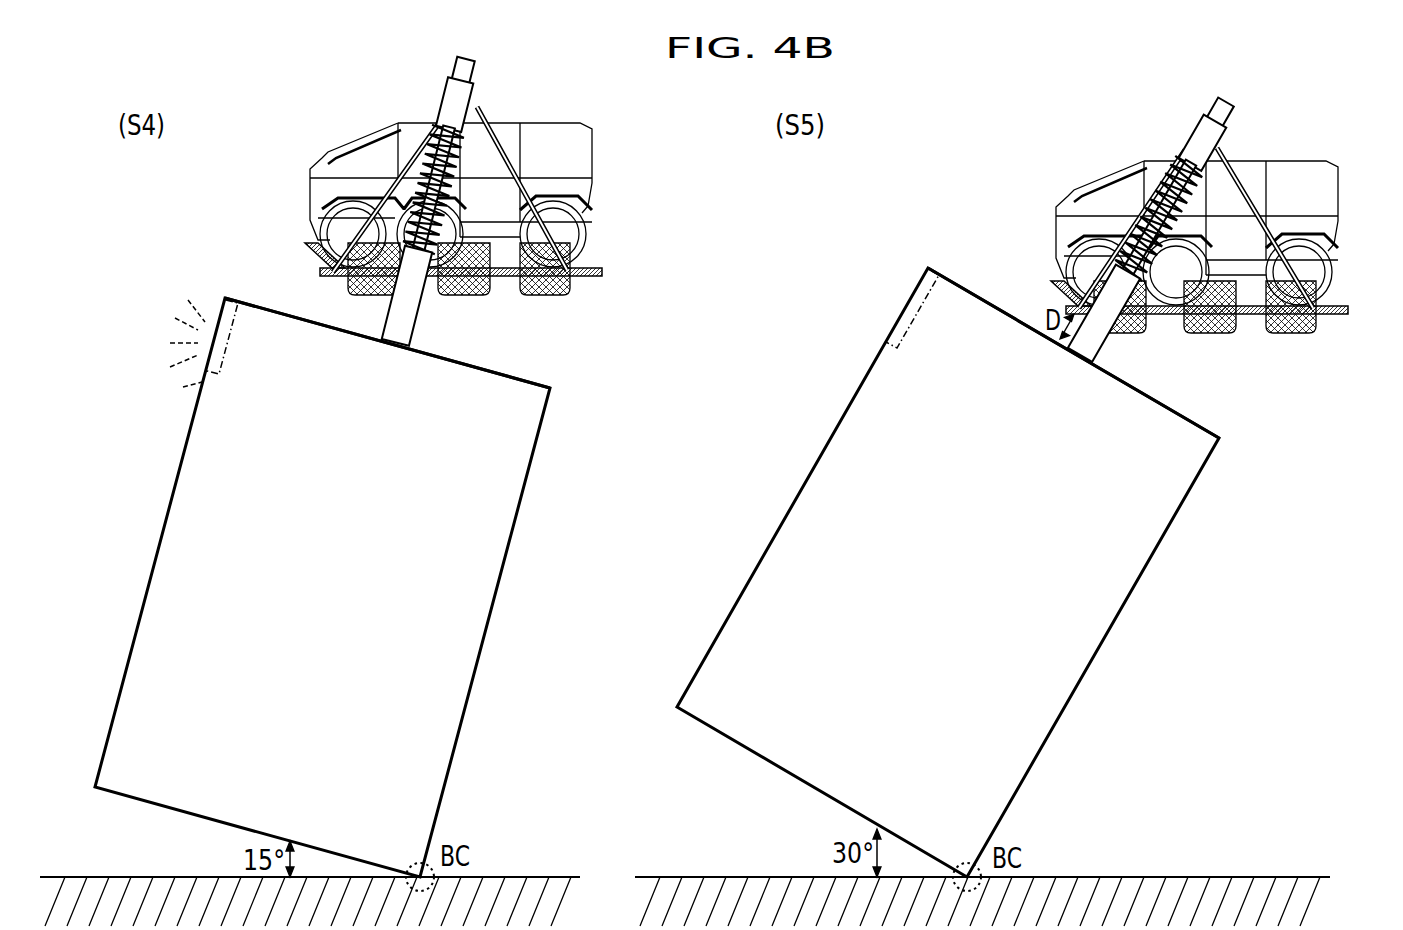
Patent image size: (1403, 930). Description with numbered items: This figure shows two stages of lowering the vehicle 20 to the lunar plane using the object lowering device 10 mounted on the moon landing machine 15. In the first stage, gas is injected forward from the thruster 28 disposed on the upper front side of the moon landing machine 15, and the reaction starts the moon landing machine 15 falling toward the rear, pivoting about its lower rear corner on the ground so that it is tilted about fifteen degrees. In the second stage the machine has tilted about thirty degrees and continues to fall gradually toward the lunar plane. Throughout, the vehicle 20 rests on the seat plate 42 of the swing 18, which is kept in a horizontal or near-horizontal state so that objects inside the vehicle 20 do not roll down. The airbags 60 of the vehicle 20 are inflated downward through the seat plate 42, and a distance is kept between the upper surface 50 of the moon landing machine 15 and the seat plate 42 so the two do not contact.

The object lowering device 10 is at (571, 91).
The moon landing machine 15 is at (518, 523).
The swing 18 is at (616, 213).
The vehicle 20 is at (511, 122).
The thruster 28 is at (888, 340).
The seat plate 42 is at (603, 268).
The upper surface 50 is at (253, 305).
The airbags 60 is at (372, 296).